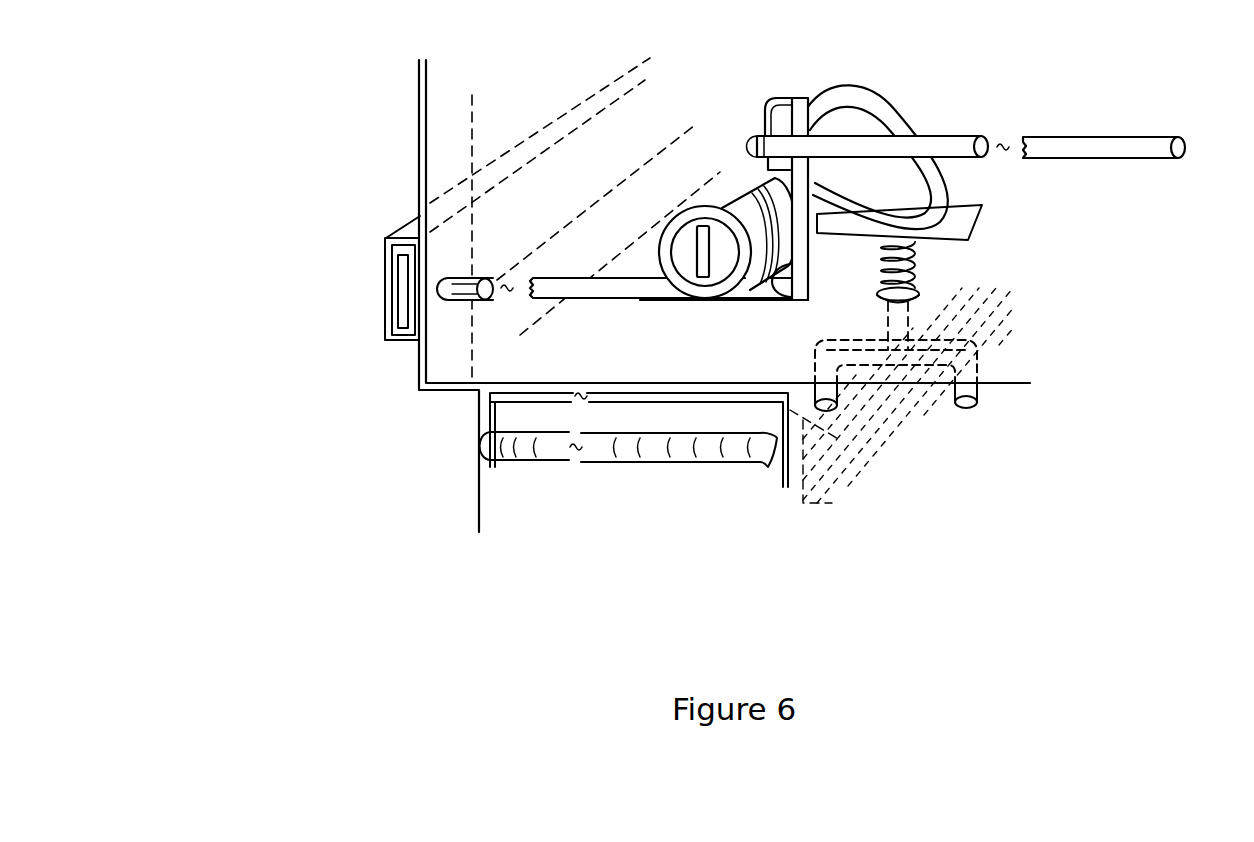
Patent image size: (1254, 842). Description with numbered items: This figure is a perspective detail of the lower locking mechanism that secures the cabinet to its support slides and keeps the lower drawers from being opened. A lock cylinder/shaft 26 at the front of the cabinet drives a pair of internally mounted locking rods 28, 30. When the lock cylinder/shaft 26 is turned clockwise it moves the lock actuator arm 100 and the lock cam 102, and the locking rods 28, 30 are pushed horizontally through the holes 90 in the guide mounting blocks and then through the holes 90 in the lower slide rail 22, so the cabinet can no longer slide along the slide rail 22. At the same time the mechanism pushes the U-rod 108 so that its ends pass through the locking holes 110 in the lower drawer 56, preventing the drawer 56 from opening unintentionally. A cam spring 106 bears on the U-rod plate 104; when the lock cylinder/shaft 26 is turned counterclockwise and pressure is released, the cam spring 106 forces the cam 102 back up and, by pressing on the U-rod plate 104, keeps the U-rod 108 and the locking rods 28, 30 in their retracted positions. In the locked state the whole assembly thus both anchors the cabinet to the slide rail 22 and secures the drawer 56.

The slide rail 22 is at (372, 283).
The lock cylinder/shaft 26 is at (672, 202).
The locking rod 28 is at (570, 270).
The locking rod 30 is at (1067, 128).
The lower drawer 56 is at (543, 470).
The hole 90 is at (460, 305).
The lock actuator arm 100 is at (785, 87).
The lock cam 102 is at (895, 100).
The U-rod plate 104 is at (998, 213).
The cam spring 106 is at (928, 262).
The U-rod 108 is at (918, 324).
The locking hole 110 is at (835, 413).